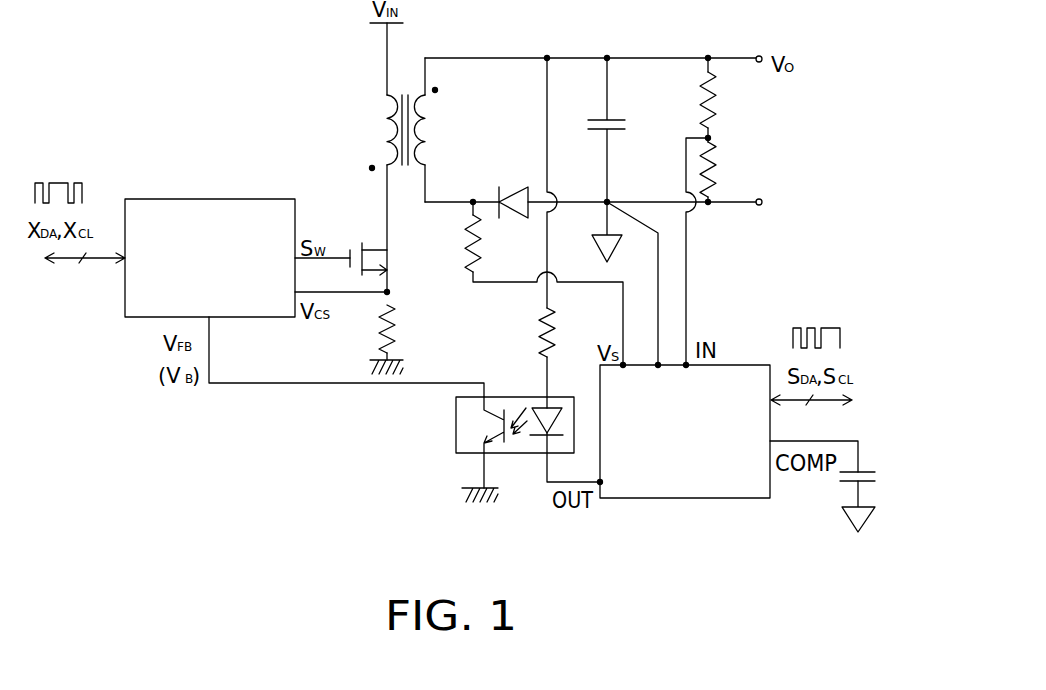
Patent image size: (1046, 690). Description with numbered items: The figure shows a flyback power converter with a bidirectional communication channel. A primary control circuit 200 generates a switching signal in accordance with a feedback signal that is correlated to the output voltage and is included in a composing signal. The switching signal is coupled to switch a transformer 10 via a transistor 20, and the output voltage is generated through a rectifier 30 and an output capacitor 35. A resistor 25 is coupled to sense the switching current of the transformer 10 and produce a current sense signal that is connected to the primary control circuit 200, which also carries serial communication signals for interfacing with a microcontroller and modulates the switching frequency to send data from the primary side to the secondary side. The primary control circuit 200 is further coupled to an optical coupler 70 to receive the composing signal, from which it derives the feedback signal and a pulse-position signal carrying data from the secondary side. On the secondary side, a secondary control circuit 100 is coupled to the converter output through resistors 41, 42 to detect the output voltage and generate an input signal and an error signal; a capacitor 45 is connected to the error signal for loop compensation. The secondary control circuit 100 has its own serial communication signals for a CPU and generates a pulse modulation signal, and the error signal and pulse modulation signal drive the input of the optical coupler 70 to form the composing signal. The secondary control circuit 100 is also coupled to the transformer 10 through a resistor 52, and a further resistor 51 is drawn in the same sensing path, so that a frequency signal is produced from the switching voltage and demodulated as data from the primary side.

The transformer 10 is at (405, 75).
The transistor 20 is at (366, 243).
The resistor 25 is at (404, 329).
The rectifier 30 is at (513, 186).
The output capacitor 35 is at (622, 130).
The resistor 41 is at (725, 100).
The resistor 42 is at (726, 172).
The capacitor 45 is at (873, 480).
The resistor 51 is at (563, 332).
The resistor 52 is at (454, 243).
The optical coupler 70 is at (456, 426).
The secondary control circuit 100 is at (702, 457).
The primary control circuit 200 is at (230, 274).